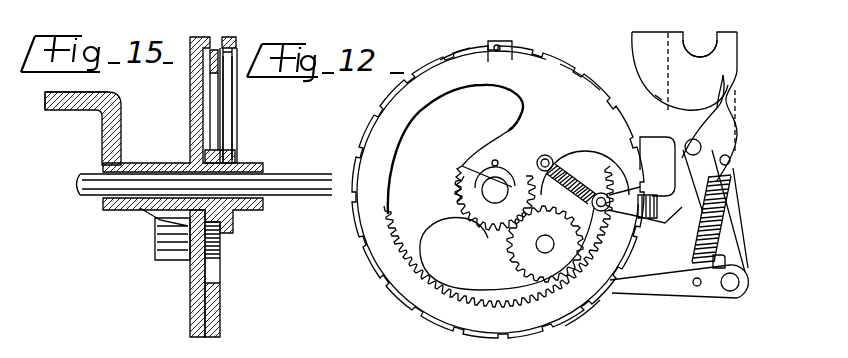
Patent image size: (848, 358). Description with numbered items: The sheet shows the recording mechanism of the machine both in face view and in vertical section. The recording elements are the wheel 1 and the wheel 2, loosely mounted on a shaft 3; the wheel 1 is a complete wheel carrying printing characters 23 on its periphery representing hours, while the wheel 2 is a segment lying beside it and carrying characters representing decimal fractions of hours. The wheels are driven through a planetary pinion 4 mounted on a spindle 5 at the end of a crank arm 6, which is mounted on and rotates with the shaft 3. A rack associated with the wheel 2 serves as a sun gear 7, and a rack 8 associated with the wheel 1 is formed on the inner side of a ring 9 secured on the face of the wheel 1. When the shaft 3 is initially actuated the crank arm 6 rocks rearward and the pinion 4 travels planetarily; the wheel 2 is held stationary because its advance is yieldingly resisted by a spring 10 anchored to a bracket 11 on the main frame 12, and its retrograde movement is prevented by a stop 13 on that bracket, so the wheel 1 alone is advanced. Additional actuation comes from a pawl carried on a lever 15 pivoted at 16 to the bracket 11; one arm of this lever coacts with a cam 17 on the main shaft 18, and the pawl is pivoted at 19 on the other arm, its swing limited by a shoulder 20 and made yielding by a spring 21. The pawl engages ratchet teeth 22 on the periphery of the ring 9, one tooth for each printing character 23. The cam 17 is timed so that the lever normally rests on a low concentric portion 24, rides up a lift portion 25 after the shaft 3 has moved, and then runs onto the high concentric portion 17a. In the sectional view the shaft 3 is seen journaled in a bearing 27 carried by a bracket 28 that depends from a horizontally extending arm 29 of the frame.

In FIG. 15, the recording wheel 1 is at (200, 40).
In FIG. 12, the recording wheel 1 is at (454, 52).
In FIG. 15, the recording wheel segment 2 is at (229, 37).
In FIG. 12, the recording wheel segment 2 is at (491, 187).
In FIG. 15, the shaft 3 is at (76, 186).
In FIG. 12, the shaft 3 is at (495, 195).
In FIG. 15, the planetary pinion 4 is at (222, 240).
In FIG. 12, the planetary pinion 4 is at (512, 252).
In FIG. 12, the spindle 5 is at (540, 248).
In FIG. 15, the crank arm 6 is at (158, 222).
In FIG. 15, the sun gear 7 is at (216, 140).
In FIG. 12, the sun gear 7 is at (485, 223).
In FIG. 15, the rack 8 is at (221, 300).
In FIG. 15, the ring 9 is at (233, 54).
In FIG. 12, the ring 9 is at (362, 144).
In FIG. 12, the spring 10 is at (560, 172).
In FIG. 12, the bracket 11 is at (652, 218).
In FIG. 15, the main frame 12 is at (62, 109).
In FIG. 12, the stop 13 is at (657, 166).
In FIG. 12, the lever 15 is at (728, 222).
In FIG. 12, the pivot 16 is at (702, 147).
In FIG. 12, the cam 17 is at (684, 71).
In FIG. 12, the high concentric portion 17a is at (656, 100).
In FIG. 12, the main shaft 18 is at (700, 45).
In FIG. 12, the pawl pivot 19 is at (733, 285).
In FIG. 12, the shoulder 20 is at (724, 262).
In FIG. 12, the spring 21 is at (733, 178).
In FIG. 12, the ratchet teeth 22 is at (584, 298).
In FIG. 12, the printing characters 23 is at (587, 75).
In FIG. 12, the low concentric portion 24 is at (736, 62).
In FIG. 12, the lift portion 25 is at (726, 101).
In FIG. 15, the bearing 27 is at (53, 212).
In FIG. 15, the bracket 28 is at (122, 125).
In FIG. 15, the horizontally extending arm 29 is at (45, 104).